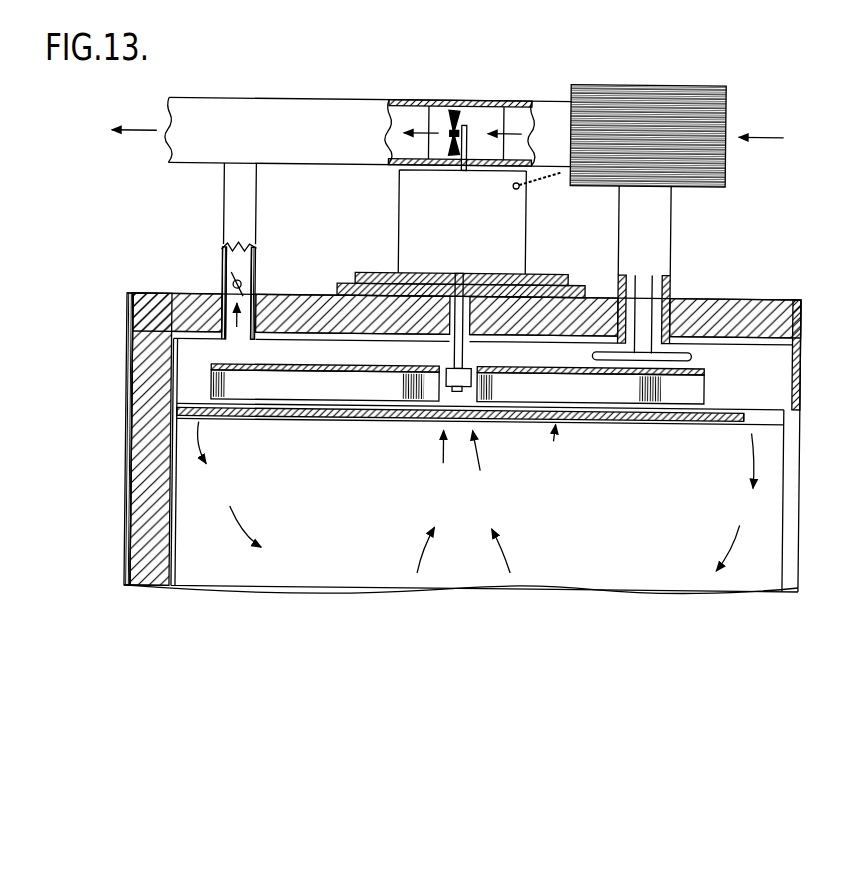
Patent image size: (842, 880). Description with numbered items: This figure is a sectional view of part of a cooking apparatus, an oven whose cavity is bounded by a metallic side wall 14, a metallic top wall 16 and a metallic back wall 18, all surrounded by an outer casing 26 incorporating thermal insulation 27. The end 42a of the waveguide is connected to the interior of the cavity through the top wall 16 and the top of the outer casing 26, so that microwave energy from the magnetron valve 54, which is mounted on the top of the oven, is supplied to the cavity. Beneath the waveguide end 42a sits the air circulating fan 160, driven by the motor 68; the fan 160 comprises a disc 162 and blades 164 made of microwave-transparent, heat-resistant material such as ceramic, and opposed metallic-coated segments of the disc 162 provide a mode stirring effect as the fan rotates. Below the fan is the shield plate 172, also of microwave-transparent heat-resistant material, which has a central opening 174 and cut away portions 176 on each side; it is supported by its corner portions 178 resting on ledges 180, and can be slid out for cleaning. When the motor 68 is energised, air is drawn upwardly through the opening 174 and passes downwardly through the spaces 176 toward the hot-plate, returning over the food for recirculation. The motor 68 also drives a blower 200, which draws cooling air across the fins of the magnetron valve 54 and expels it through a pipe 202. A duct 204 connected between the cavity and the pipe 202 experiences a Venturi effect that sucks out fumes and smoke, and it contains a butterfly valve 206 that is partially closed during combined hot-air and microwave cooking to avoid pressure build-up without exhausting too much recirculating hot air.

The side wall 14 is at (380, 532).
The top wall 16 is at (722, 344).
The back wall 18 is at (178, 546).
The outer casing 26 is at (741, 300).
The thermal insulation 27 is at (706, 312).
The waveguide end 42a is at (662, 221).
The magnetron valve 54 is at (652, 77).
The motor 68 is at (470, 226).
The air circulating fan 160 is at (325, 398).
The disc 162 is at (277, 362).
The blades 164 is at (228, 375).
The shield plate 172 is at (555, 440).
The central opening 174 is at (466, 412).
The cut away portions 176 is at (210, 413).
The corner portions 178 is at (748, 412).
The ledges 180 is at (377, 420).
The blower 200 is at (462, 122).
The pipe 202 is at (318, 104).
The duct 204 is at (233, 186).
The butterfly valve 206 is at (221, 256).